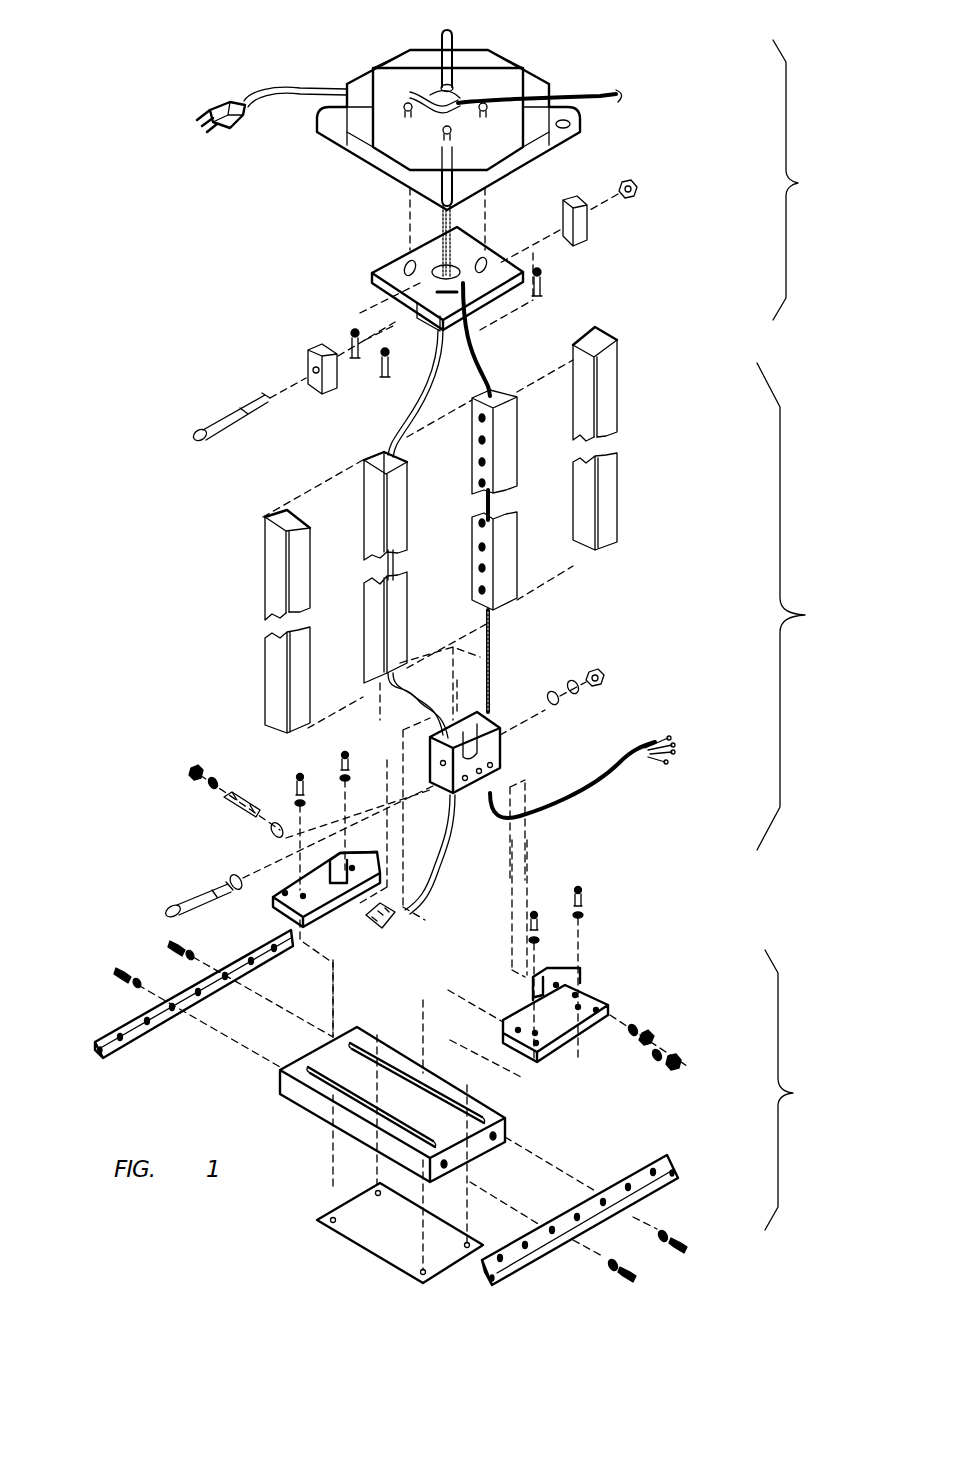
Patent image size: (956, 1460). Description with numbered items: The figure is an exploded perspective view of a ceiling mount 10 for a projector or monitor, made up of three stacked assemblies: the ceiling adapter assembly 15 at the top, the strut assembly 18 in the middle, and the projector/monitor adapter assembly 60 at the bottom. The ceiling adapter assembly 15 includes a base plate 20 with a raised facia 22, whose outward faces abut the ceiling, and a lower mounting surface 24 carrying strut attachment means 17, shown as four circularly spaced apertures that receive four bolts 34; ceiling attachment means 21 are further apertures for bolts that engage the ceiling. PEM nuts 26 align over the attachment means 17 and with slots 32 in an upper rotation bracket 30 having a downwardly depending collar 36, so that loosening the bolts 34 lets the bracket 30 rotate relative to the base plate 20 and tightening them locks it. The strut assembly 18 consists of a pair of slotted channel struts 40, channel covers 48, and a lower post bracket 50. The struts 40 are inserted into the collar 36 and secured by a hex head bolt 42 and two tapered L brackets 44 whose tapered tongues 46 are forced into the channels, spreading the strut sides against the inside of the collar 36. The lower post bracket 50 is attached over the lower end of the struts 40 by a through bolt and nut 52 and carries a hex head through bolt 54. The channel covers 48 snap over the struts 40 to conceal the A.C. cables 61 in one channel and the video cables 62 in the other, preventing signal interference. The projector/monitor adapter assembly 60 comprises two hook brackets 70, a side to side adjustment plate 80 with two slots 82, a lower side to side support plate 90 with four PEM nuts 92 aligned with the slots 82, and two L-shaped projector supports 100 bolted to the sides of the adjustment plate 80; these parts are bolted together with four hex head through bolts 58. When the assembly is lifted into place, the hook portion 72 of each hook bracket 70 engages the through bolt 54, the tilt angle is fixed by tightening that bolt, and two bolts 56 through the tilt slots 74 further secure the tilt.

The ceiling mount 10 is at (128, 116).
The ceiling adapter assembly 15 is at (803, 180).
The strut attachment means 17 is at (484, 100).
The strut assembly 18 is at (798, 606).
The base plate 20 is at (562, 64).
The ceiling attachment means 21 is at (457, 51).
The raised facia 22 is at (362, 88).
The lower mounting surface 24 is at (429, 137).
The PEM nuts 26 is at (440, 78).
The upper rotation bracket 30 is at (490, 253).
The slots 32 is at (432, 252).
The bolts 34 is at (545, 297).
The collar 36 is at (395, 316).
The struts 40 is at (363, 470).
The hex head bolt 42 is at (196, 434).
The tapered L brackets 44 is at (605, 226).
The tapered tongues 46 is at (588, 243).
The channel covers 48 is at (620, 392).
The lower post bracket 50 is at (500, 757).
The through bolt and nut 52 is at (170, 916).
The through bolt 54 is at (226, 810).
The bolts 56 is at (193, 770).
The through bolts 58 is at (345, 760).
The projector/monitor adapter assembly 60 is at (797, 1090).
The A.C. cables 61 is at (256, 92).
The video cables 62 is at (592, 96).
The hook brackets 70 is at (282, 908).
The hook portion 72 is at (547, 980).
The tilt slots 74 is at (558, 985).
The side to side adjustment plate 80 is at (313, 1113).
The slots 82 is at (448, 1163).
The lower side to side support plate 90 is at (326, 1212).
The PEM nuts 92 is at (378, 1196).
The L-shaped projector supports 100 is at (148, 1032).